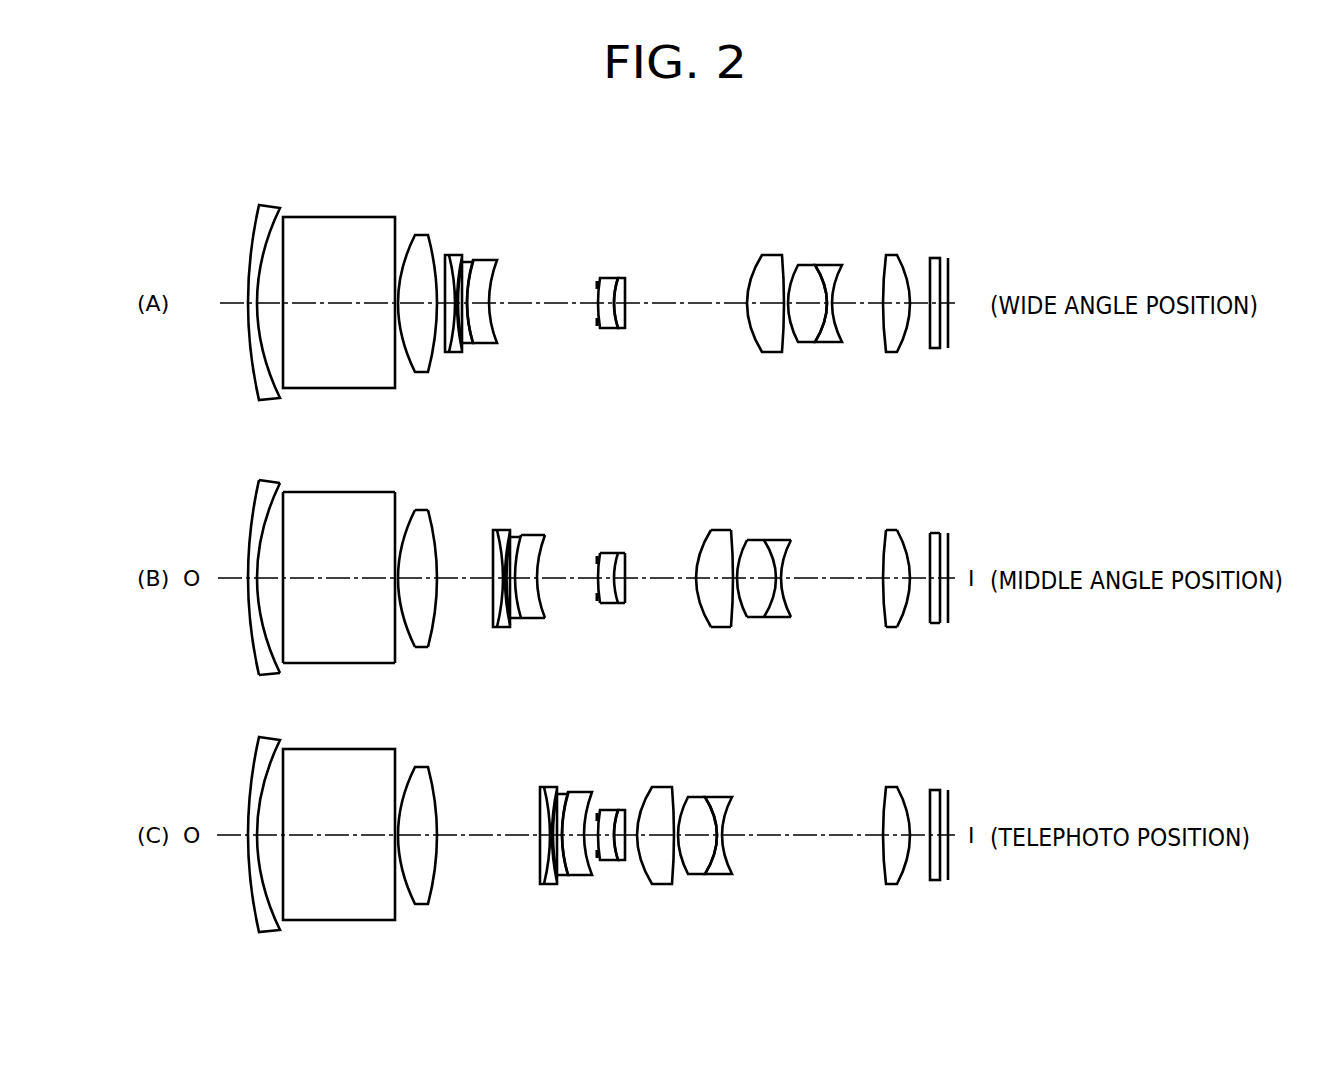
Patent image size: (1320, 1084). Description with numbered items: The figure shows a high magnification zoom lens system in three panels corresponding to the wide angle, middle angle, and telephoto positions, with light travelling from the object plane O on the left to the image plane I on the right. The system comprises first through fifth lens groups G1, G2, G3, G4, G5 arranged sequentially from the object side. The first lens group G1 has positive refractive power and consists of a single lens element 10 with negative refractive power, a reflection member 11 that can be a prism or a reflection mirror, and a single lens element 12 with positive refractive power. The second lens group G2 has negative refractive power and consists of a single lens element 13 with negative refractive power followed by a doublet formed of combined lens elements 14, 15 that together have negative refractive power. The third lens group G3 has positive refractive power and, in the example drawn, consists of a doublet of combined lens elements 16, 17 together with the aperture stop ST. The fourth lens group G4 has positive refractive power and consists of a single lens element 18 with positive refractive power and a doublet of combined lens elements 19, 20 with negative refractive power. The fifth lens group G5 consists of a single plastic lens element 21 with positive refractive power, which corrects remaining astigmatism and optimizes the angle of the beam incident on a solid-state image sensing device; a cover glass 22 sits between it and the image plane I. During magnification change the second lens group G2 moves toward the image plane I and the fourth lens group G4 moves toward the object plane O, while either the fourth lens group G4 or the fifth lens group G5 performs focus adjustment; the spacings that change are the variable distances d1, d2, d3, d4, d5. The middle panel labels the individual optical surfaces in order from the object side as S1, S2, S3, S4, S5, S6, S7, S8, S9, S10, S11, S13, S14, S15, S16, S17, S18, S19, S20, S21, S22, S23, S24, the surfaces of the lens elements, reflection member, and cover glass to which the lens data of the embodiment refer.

The single lens element 10 is at (270, 402).
The reflection member 11 is at (340, 390).
The single lens element 12 is at (418, 374).
The single lens element 13 is at (450, 354).
The lens element 14 is at (468, 346).
The lens element 15 is at (490, 346).
The lens element 16 is at (604, 330).
The lens element 17 is at (620, 330).
The single lens element 18 is at (770, 354).
The lens element 19 is at (805, 344).
The lens element 20 is at (830, 344).
The single lens element 21 is at (890, 354).
The cover glass 22 is at (936, 350).
The first lens group G1 is at (433, 193).
The second lens group G2 is at (445, 193).
The third lens group G3 is at (585, 193).
The fourth lens group G4 is at (748, 193).
The fifth lens group G5 is at (858, 193).
The aperture stop ST is at (596, 284).
The object plane O is at (191, 303).
The image plane I is at (961, 303).
The variable distance d1 is at (438, 300).
The variable distance d2 is at (521, 301).
The variable distance d3 is at (691, 301).
The variable distance d4 is at (855, 301).
The variable distance d5 is at (918, 301).
The lens surface 1 S1 is at (248, 622).
The lens surface 2 S2 is at (269, 645).
The lens surface 3 S3 is at (284, 622).
The lens surface 4 S4 is at (396, 630).
The lens surface 5 S5 is at (407, 634).
The lens surface 6 S6 is at (432, 638).
The lens surface 7 S7 is at (492, 601).
The lens surface 8 S8 is at (506, 612).
The lens surface 9 S9 is at (516, 608).
The lens surface 10 S10 is at (534, 606).
The lens surface 11 S11 is at (543, 604).
The lens surface 13 S13 is at (597, 560).
The lens surface 14 S14 is at (612, 563).
The lens surface 15 S15 is at (626, 565).
The lens surface 16 S16 is at (701, 608).
The lens surface 17 S17 is at (735, 612).
The lens surface 18 S18 is at (745, 540).
The lens surface 19 S19 is at (770, 545).
The lens surface 20 S20 is at (790, 558).
The lens surface 21 S21 is at (883, 606).
The lens surface 22 S22 is at (905, 612).
The lens surface 23 S23 is at (928, 552).
The lens surface 24 S24 is at (950, 541).